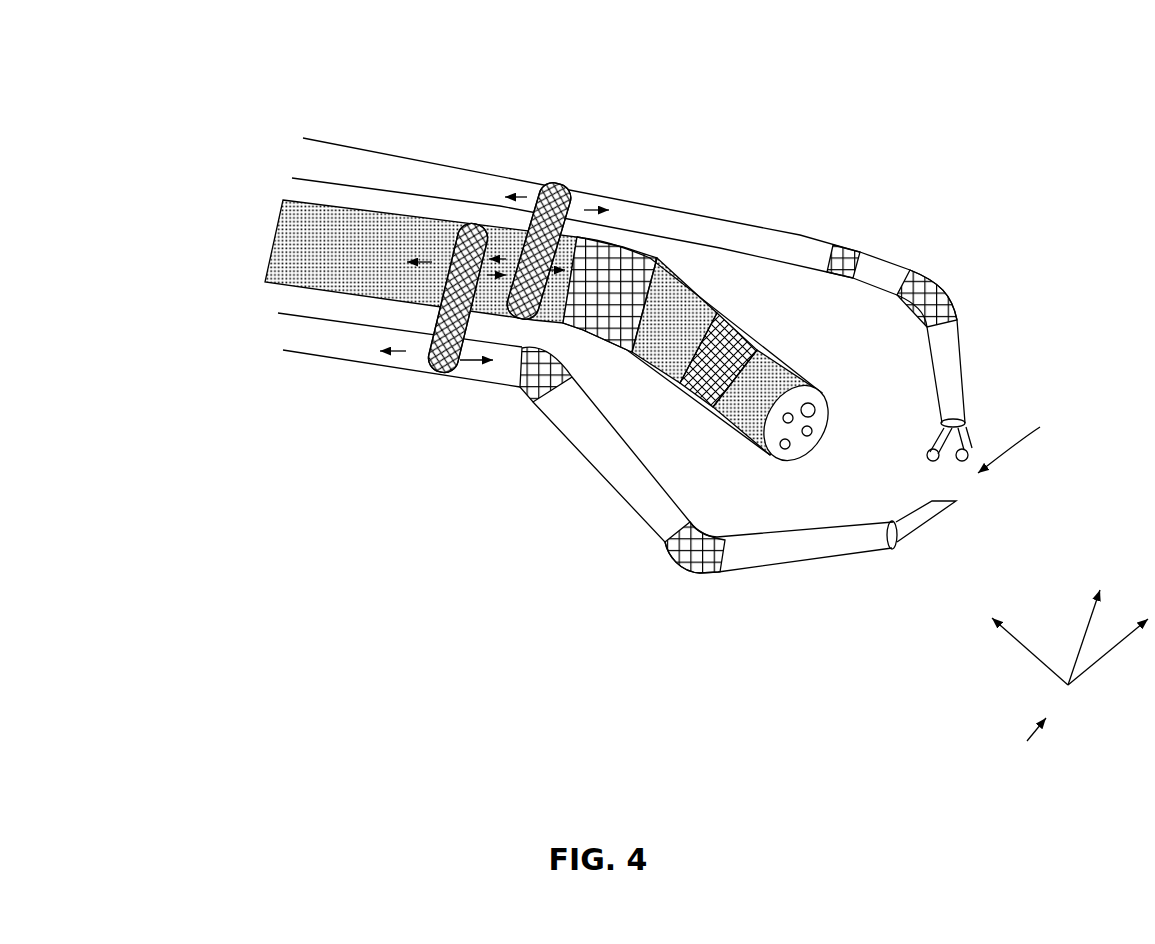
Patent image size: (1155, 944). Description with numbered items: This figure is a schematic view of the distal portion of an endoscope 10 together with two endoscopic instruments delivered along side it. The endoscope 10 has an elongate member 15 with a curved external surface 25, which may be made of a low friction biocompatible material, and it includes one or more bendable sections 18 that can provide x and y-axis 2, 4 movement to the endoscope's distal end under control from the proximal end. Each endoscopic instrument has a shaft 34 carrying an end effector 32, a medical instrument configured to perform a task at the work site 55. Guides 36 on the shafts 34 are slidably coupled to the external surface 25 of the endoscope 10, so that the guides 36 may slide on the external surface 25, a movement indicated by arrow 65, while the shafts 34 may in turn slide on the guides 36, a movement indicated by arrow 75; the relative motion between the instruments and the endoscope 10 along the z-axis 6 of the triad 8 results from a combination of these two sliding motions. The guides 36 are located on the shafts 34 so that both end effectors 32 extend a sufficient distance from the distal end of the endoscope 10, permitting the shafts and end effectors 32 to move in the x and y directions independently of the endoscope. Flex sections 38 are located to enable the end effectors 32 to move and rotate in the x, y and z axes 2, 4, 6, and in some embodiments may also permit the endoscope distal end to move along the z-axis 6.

The endoscope 10 is at (381, 203).
The elongate member 15 is at (337, 233).
The bendable section 18 is at (623, 247).
The external surface 25 is at (291, 260).
The end effector 32 is at (967, 437).
The shaft 34 is at (300, 193).
The guide 36 is at (547, 182).
The flex section 38 is at (520, 396).
The work site 55 is at (1027, 444).
The arrow indicating guide movement 65 is at (430, 261).
The arrow indicating instrument movement 75 is at (588, 210).
The x-axis 2 is at (1102, 662).
The y-axis 4 is at (1088, 625).
The z-axis 6 is at (1025, 655).
The triad 8 is at (1025, 742).